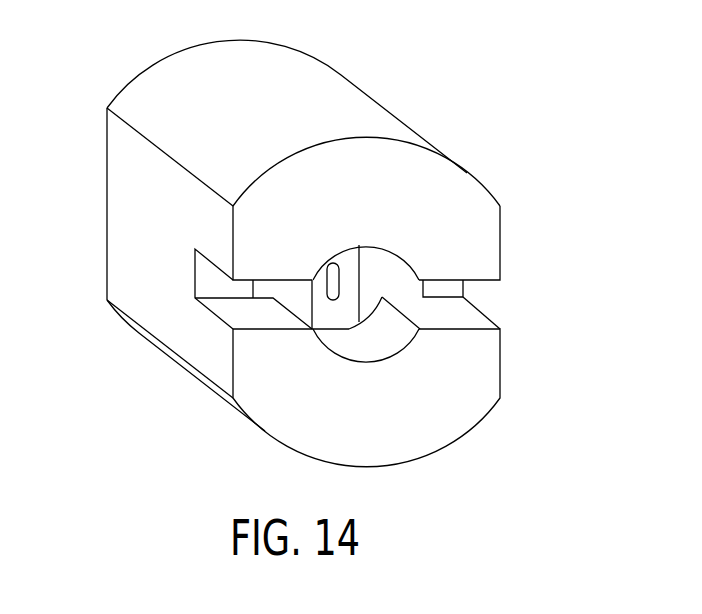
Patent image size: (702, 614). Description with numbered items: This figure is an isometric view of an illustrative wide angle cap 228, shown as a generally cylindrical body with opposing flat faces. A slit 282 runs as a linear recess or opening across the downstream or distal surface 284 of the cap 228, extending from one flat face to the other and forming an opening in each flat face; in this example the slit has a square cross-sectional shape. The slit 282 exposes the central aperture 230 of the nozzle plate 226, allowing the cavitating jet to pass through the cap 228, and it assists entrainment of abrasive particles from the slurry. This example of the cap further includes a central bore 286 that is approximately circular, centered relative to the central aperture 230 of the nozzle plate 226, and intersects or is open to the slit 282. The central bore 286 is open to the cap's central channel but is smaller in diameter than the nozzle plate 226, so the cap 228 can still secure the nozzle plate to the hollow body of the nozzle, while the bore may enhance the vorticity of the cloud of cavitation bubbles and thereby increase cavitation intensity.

The nozzle plate 226 is at (378, 263).
The cap 228 is at (137, 92).
The central aperture 230 is at (334, 266).
The slit 282 is at (226, 323).
The distal surface 284 is at (457, 188).
The central bore 286 is at (373, 352).